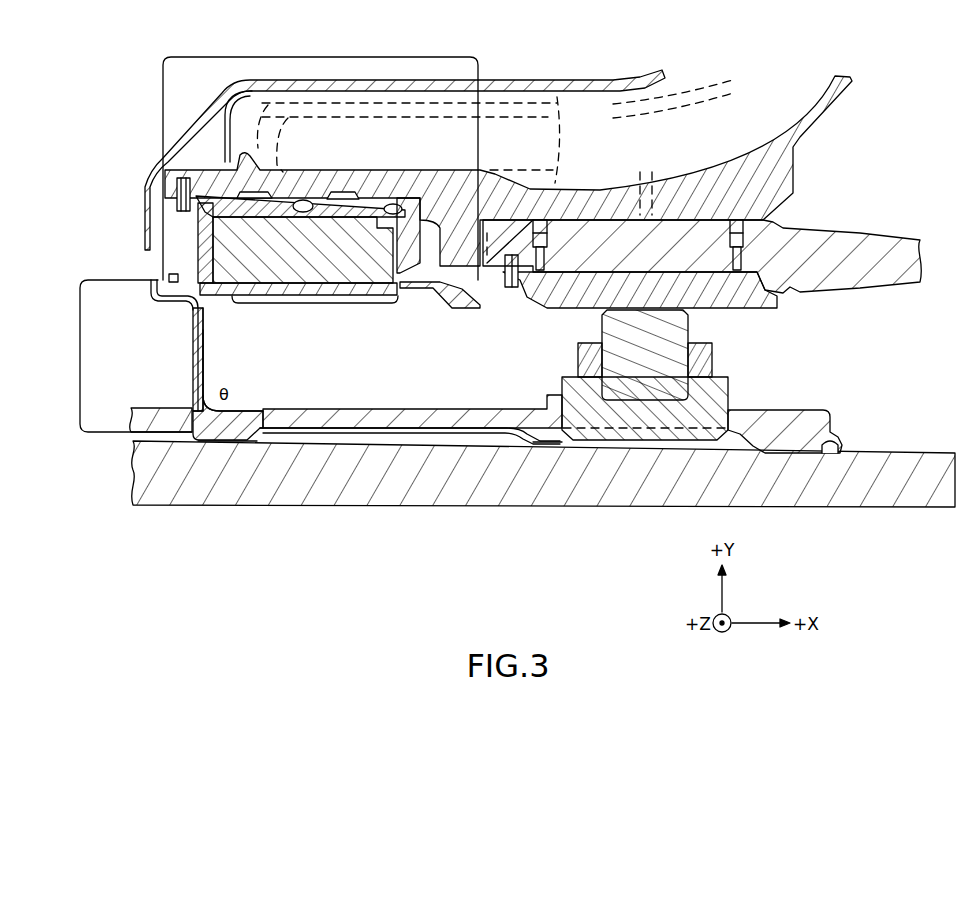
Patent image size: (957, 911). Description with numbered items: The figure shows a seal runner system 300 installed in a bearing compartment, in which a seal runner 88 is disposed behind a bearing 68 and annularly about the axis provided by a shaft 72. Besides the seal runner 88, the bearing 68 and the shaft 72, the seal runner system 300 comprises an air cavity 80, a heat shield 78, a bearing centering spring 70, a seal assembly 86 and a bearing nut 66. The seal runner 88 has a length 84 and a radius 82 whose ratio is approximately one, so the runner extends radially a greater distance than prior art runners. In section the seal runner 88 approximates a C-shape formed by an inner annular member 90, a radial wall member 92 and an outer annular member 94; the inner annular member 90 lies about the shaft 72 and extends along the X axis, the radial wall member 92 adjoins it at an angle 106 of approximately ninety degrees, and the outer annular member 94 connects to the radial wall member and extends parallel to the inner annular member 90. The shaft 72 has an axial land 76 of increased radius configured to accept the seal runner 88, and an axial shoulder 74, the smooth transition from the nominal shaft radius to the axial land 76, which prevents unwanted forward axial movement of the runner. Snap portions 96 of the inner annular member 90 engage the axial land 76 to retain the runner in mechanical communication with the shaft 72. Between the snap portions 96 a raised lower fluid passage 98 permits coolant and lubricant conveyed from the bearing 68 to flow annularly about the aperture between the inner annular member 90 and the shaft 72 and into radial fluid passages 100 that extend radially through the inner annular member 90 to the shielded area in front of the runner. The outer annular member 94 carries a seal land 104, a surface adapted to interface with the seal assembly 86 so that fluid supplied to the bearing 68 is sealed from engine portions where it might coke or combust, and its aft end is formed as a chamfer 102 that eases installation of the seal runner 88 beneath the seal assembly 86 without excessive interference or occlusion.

The seal runner system 300 is at (120, 146).
The length 84 is at (318, 57).
The seal assembly 86 is at (232, 258).
The radius 82 is at (79, 358).
The air cavity 80 is at (193, 301).
The heat shield 78 is at (195, 331).
The outer annular member 94 is at (200, 357).
The axial shoulder 74 is at (203, 404).
The angle 106 is at (229, 375).
The radial fluid passages 100 is at (244, 396).
The inner annular member 90 is at (423, 417).
The lower fluid passage 98 is at (297, 432).
The shaft 72 is at (927, 502).
The axial land 76 is at (187, 448).
The seal runner 88 is at (180, 452).
The snap portions 96 is at (240, 440).
The seal land 104 is at (313, 303).
The radial wall member 92 is at (403, 290).
The chamfer 102 is at (455, 292).
The bearing centering spring 70 is at (805, 245).
The bearing 68 is at (678, 333).
The bearing nut 66 is at (783, 416).